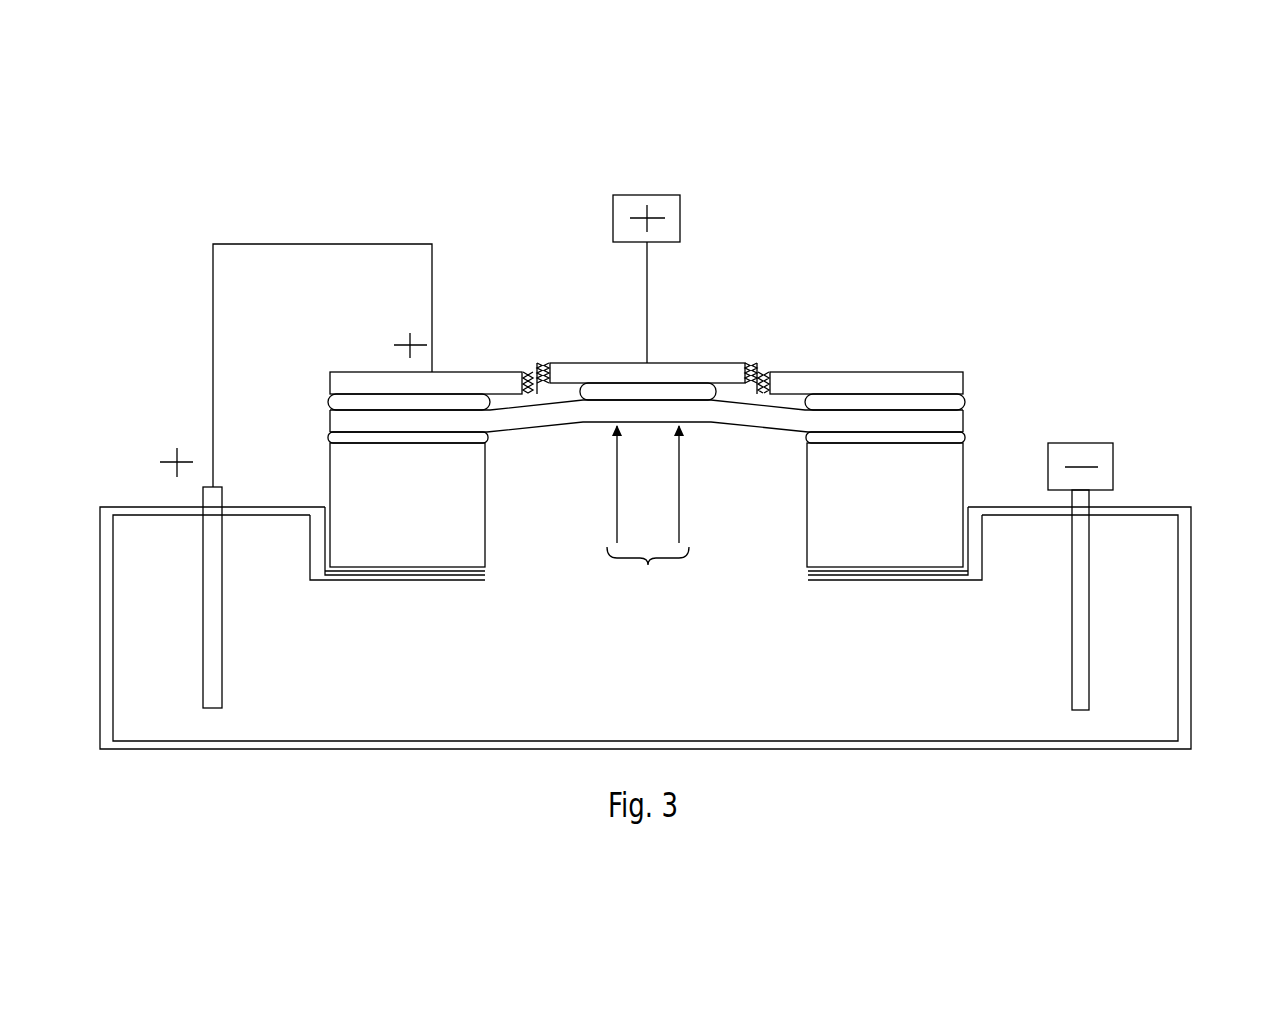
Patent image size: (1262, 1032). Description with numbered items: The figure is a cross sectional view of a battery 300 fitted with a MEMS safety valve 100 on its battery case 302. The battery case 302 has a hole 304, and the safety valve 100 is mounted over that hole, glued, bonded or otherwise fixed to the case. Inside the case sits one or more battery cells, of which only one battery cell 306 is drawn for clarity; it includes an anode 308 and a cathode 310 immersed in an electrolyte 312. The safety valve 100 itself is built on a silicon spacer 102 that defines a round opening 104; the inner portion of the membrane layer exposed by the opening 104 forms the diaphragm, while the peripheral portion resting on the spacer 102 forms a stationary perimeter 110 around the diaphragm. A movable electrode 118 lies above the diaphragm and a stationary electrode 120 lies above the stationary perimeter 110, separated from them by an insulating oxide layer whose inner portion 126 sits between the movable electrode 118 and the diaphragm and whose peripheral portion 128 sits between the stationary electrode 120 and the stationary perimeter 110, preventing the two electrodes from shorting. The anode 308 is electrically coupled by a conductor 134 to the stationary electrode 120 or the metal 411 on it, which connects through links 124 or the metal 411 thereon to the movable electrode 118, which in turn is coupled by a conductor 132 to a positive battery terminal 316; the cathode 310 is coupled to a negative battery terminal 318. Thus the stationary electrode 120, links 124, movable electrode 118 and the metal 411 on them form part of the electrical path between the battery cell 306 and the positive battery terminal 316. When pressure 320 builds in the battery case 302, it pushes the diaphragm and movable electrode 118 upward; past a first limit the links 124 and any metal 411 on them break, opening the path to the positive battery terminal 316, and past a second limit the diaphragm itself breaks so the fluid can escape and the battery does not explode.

The safety valve 100 is at (1075, 378).
The silicon spacer 102 is at (440, 508).
The opening 104 is at (708, 520).
The stationary perimeter 110 is at (410, 420).
The movable electrode 118 is at (662, 380).
The stationary electrode 120 is at (345, 380).
The links 124 is at (531, 372).
The inner portion of second oxide layer 126 is at (682, 398).
The peripheral portion of second oxide layer 128 is at (443, 400).
The conductor 132 is at (648, 268).
The conductor 134 is at (432, 290).
The battery 300 is at (293, 208).
The battery case 302 is at (1191, 575).
The hole 304 is at (718, 595).
The battery cell 306 is at (1187, 665).
The anode 308 is at (210, 618).
The cathode 310 is at (1080, 630).
The electrolyte 312 is at (684, 690).
The positive battery terminal 316 is at (673, 215).
The negative battery terminal 318 is at (1102, 452).
The pressure 320 is at (648, 510).
The metal 411 is at (378, 372).